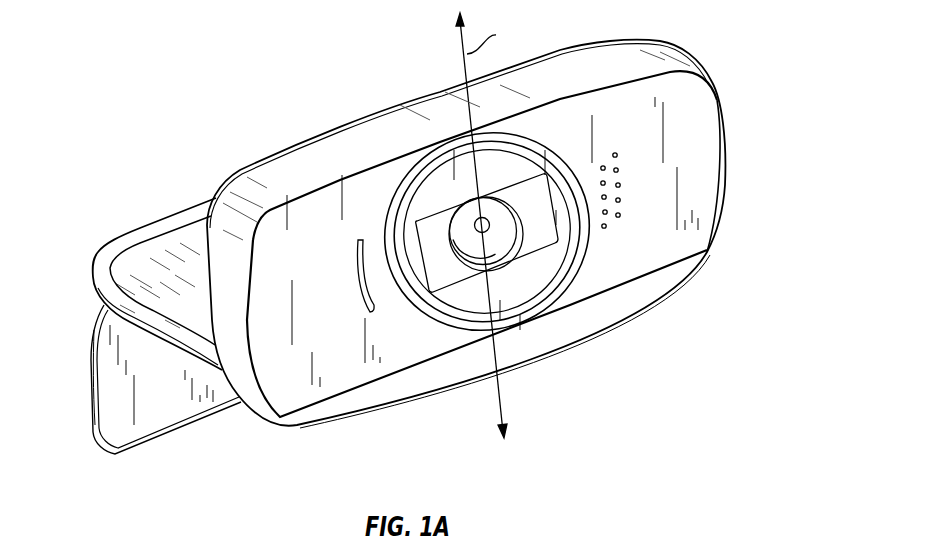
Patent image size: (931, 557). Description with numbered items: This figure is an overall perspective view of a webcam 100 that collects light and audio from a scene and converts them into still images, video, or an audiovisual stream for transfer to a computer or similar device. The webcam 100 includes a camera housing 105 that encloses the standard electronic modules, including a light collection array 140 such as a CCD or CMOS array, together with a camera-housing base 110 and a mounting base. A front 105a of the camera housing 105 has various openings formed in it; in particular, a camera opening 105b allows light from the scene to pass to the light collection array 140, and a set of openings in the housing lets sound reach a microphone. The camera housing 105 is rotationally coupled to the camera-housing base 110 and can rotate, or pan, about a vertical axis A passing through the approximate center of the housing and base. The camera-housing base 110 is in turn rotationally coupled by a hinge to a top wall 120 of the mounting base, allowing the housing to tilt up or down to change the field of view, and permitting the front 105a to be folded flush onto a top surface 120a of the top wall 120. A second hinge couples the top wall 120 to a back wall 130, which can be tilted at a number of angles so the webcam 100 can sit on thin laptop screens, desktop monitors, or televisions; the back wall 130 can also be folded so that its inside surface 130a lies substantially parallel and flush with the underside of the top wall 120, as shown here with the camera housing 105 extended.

The webcam 100 is at (535, 411).
The camera housing 105 is at (725, 137).
The front of the camera housing 105a is at (343, 300).
The camera opening 105b is at (498, 287).
The camera-housing base 110 is at (663, 295).
The top wall 120 is at (157, 232).
The top surface 120a is at (130, 265).
The back wall 130 is at (135, 447).
The inside surface 130a is at (105, 348).
The light collection array 140 is at (478, 222).